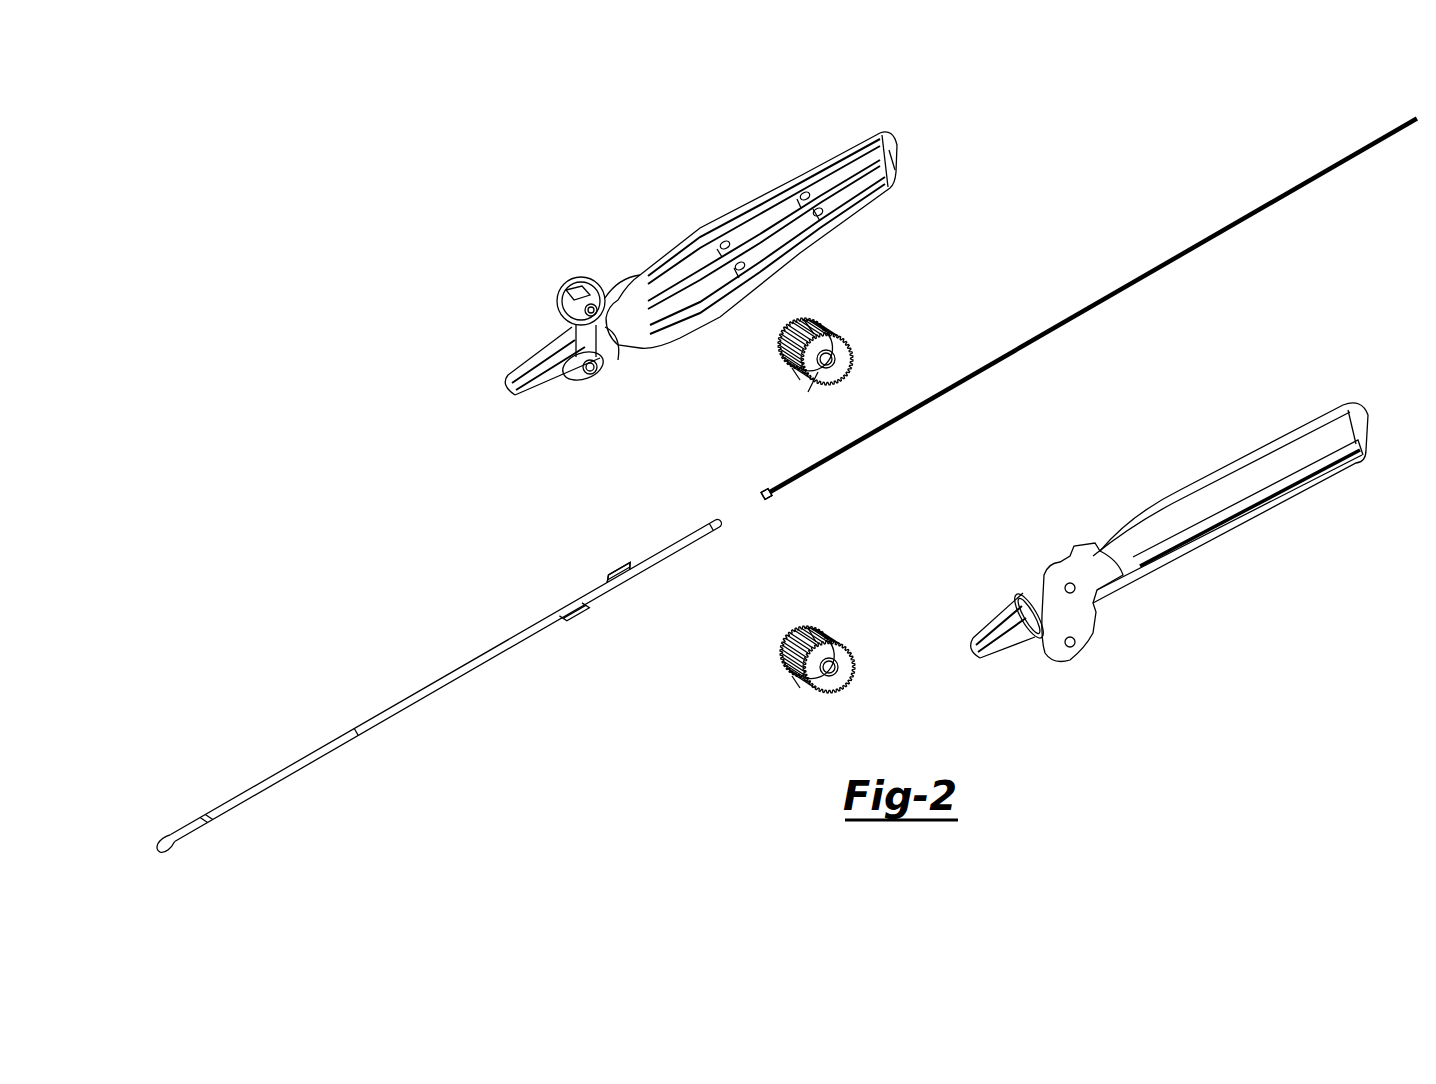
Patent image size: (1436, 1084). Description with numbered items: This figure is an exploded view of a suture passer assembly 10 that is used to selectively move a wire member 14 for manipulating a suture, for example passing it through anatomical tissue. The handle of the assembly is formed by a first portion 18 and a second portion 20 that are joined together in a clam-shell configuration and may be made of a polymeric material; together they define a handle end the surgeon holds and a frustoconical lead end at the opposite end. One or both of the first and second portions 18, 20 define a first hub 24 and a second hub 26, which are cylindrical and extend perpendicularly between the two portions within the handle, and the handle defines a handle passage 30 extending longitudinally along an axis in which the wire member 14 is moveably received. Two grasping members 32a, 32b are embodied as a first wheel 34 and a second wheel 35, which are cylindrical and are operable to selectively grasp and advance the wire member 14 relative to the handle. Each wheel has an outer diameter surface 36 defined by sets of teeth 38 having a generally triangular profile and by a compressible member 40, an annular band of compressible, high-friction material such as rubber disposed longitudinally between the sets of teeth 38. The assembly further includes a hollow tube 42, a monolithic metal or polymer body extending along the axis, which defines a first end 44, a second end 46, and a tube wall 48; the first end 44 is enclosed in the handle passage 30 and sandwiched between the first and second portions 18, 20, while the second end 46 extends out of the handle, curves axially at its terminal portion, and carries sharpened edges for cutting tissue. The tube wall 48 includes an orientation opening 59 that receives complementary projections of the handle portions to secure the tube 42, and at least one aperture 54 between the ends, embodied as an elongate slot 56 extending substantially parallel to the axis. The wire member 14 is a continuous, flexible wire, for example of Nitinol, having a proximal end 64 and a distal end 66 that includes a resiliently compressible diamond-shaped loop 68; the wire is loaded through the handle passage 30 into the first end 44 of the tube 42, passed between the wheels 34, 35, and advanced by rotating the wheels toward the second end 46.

The suture passer assembly 10 is at (492, 252).
The wire member 14 is at (1256, 226).
The first portion 18 is at (790, 175).
The second portion 20 is at (1270, 460).
The first hub 24 is at (572, 300).
The second hub 26 is at (582, 380).
The handle passage 30 is at (898, 160).
The grasping member 32a is at (856, 320).
The grasping member 32b is at (806, 706).
The first wheel 34 is at (838, 356).
The second wheel 35 is at (840, 670).
The outer diameter surface 36 is at (830, 322).
The teeth 38 is at (790, 364).
The compressible member 40 is at (806, 330).
The hollow tube 42 is at (466, 688).
The first end 44 is at (692, 542).
The second end 46 is at (163, 832).
The tube wall 48 is at (386, 690).
The aperture 54 is at (618, 562).
The elongate slot 56 is at (606, 578).
The orientation opening 59 is at (586, 612).
The proximal end 64 is at (1412, 116).
The distal end 66 is at (792, 488).
The diamond-shaped loop 68 is at (768, 498).